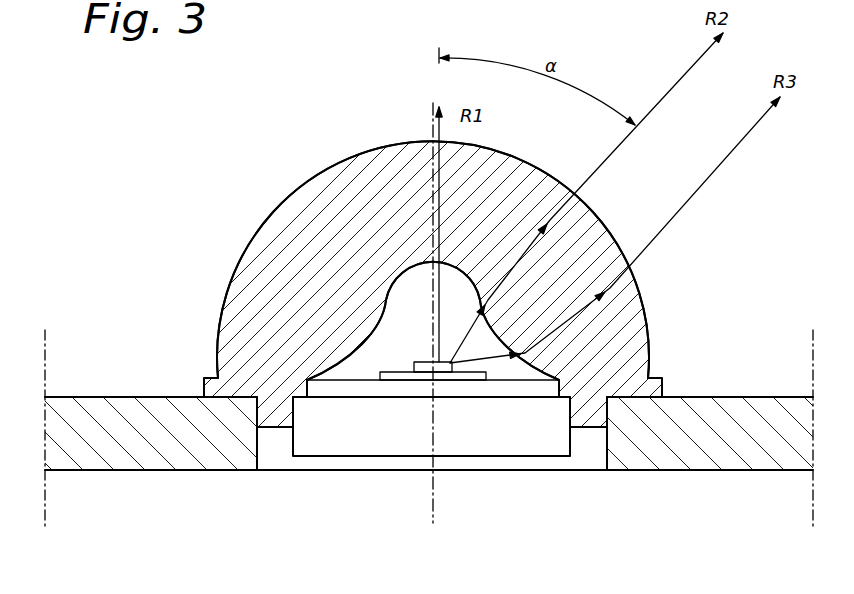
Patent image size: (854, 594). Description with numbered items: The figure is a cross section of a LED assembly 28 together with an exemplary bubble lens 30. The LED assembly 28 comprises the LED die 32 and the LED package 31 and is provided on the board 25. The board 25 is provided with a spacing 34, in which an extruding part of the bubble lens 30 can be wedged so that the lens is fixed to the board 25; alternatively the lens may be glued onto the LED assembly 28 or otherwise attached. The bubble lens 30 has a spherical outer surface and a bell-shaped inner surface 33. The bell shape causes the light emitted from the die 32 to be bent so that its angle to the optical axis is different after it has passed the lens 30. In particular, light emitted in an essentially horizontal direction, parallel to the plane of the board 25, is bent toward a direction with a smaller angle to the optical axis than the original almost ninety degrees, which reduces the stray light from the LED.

The board 25 is at (680, 482).
The LED assembly 28 is at (645, 322).
The bubble lens 30 is at (276, 286).
The LED package 31 is at (410, 392).
The LED die 32 is at (446, 372).
The bell-shaped inner surface 33 is at (343, 350).
The spacing 34 is at (588, 437).